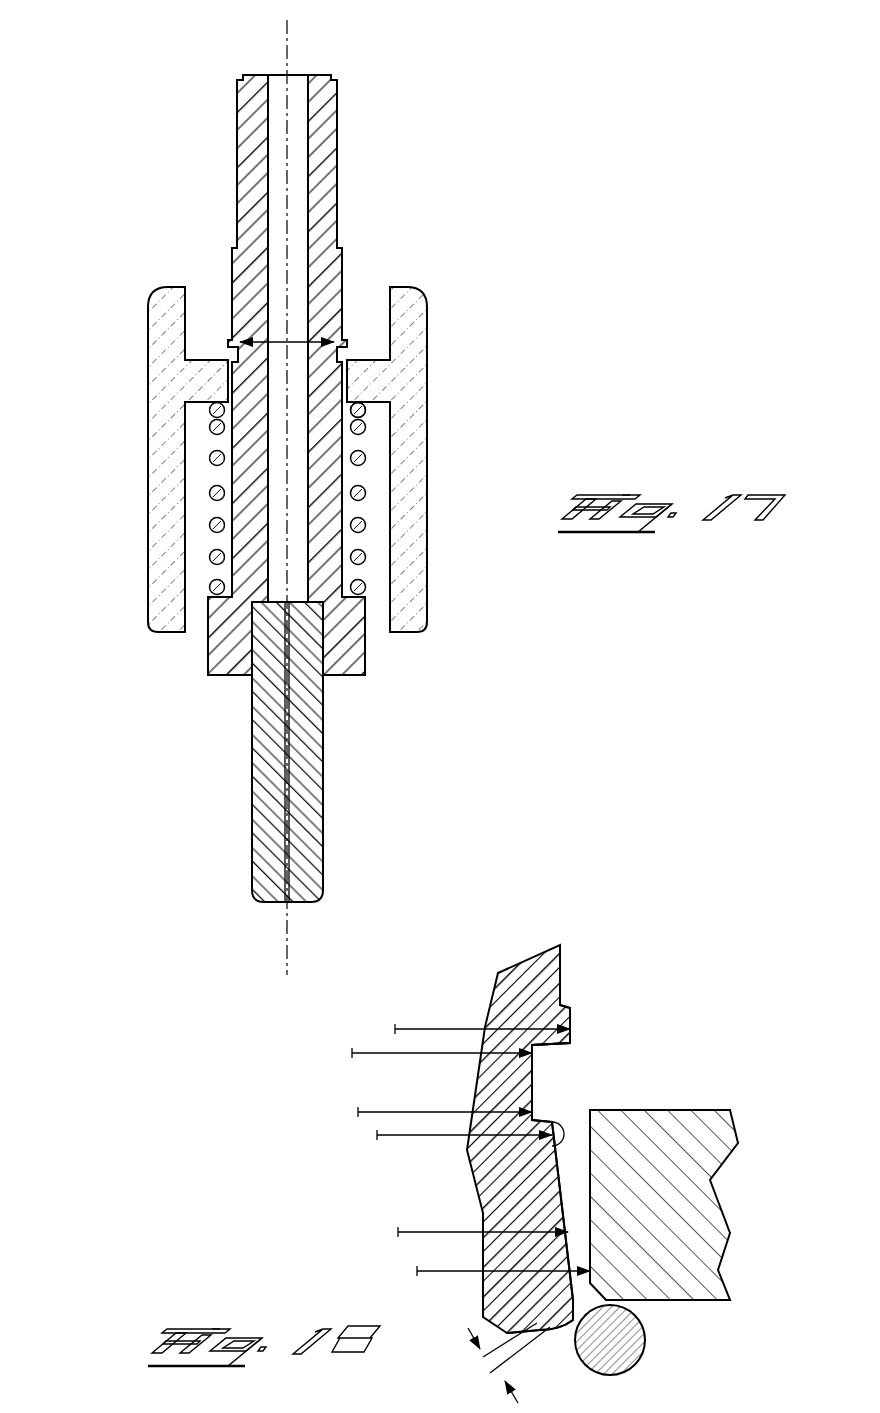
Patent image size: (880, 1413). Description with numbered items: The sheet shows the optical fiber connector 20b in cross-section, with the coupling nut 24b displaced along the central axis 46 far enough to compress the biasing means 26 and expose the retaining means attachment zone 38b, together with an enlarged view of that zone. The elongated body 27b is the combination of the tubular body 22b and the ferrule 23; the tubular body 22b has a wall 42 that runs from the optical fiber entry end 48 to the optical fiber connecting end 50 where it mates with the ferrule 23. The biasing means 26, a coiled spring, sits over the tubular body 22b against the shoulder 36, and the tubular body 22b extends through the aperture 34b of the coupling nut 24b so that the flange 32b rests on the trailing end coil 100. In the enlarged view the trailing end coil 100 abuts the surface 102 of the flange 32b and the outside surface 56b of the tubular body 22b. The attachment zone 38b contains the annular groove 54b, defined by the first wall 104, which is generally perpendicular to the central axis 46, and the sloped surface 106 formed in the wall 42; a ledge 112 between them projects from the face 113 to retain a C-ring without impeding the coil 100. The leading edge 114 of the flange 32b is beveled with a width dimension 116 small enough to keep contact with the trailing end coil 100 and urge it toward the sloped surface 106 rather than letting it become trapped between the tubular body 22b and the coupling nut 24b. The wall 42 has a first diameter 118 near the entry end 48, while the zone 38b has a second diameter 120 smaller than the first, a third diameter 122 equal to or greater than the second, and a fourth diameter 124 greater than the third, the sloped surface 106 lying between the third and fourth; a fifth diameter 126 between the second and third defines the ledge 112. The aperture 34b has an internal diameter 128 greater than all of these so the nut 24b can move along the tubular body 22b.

In FIG. 17, the optical fiber connector 20b is at (452, 170).
In FIG. 17, the tubular body 22b is at (245, 116).
In FIG. 17, the ferrule 23 is at (242, 765).
In FIG. 17, the coupling nut 24b is at (143, 425).
In FIG. 17, the biasing means 26 is at (200, 554).
In FIG. 17, the elongated body 27b is at (360, 555).
In FIG. 17, the flange 32b is at (212, 357).
In FIG. 18, the flange 32b is at (717, 1128).
In FIG. 17, the aperture 34b is at (345, 366).
In FIG. 18, the aperture 34b is at (578, 1108).
In FIG. 17, the shoulder 36 is at (210, 663).
In FIG. 17, the retaining means attachment zone 38b is at (208, 286).
In FIG. 18, the retaining means attachment zone 38b is at (708, 1006).
In FIG. 17, the wall 42 is at (241, 375).
In FIG. 18, the wall 42 is at (528, 965).
In FIG. 17, the central axis 46 is at (288, 35).
In FIG. 17, the optical fiber entry end 48 is at (258, 73).
In FIG. 17, the optical fiber connecting end 50 is at (273, 903).
In FIG. 17, the annular groove 54b is at (356, 354).
In FIG. 18, the annular groove 54b is at (562, 1083).
In FIG. 17, the outside surface 56b is at (233, 255).
In FIG. 17, the trailing end coil 100 is at (366, 412).
In FIG. 18, the trailing end coil 100 is at (623, 1367).
In FIG. 18, the surface 102 is at (691, 1222).
In FIG. 18, the first wall 104 is at (560, 1048).
In FIG. 18, the sloped surface 106 is at (563, 1170).
In FIG. 18, the ledge 112 is at (552, 1152).
In FIG. 18, the face 113 is at (575, 1055).
In FIG. 18, the leading edge 114 is at (540, 1328).
In FIG. 18, the width dimension 116 is at (490, 1367).
In FIG. 17, the first diameter 118 is at (278, 338).
In FIG. 18, the first diameter 118 is at (420, 1022).
In FIG. 18, the second diameter 120 is at (378, 1050).
In FIG. 18, the third diameter 122 is at (390, 1138).
In FIG. 18, the fourth diameter 124 is at (425, 1230).
In FIG. 18, the fifth diameter 126 is at (388, 1108).
In FIG. 18, the internal diameter 128 is at (433, 1262).